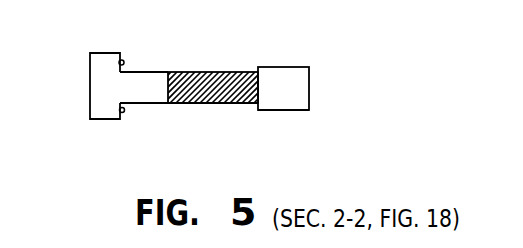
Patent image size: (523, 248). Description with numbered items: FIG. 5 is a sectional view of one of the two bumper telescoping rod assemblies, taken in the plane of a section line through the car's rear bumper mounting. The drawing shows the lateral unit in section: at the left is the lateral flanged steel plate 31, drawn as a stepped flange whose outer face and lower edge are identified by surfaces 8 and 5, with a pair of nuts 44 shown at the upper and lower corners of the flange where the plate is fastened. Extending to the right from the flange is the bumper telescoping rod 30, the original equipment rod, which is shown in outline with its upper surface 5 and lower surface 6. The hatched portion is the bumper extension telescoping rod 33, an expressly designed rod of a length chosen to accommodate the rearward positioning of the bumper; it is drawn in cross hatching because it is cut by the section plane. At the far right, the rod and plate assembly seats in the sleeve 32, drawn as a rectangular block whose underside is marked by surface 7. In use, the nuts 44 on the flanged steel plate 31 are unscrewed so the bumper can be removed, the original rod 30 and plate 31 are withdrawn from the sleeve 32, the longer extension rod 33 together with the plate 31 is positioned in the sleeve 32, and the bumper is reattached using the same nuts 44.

The upper surface of body 5 is at (148, 72).
The lower surface of hatched section 6 is at (205, 103).
The bottom of block 7 is at (279, 110).
The bottom of flange 8 is at (102, 115).
The bumper telescoping rod 30 is at (133, 82).
The lateral flanged steel plate 31 is at (89, 119).
The sleeve 32 is at (288, 78).
The bumper extension telescoping rod 33 is at (230, 74).
The nut 44 is at (118, 63).